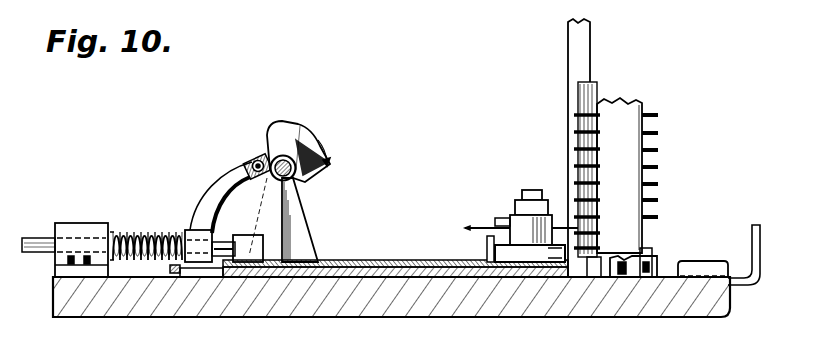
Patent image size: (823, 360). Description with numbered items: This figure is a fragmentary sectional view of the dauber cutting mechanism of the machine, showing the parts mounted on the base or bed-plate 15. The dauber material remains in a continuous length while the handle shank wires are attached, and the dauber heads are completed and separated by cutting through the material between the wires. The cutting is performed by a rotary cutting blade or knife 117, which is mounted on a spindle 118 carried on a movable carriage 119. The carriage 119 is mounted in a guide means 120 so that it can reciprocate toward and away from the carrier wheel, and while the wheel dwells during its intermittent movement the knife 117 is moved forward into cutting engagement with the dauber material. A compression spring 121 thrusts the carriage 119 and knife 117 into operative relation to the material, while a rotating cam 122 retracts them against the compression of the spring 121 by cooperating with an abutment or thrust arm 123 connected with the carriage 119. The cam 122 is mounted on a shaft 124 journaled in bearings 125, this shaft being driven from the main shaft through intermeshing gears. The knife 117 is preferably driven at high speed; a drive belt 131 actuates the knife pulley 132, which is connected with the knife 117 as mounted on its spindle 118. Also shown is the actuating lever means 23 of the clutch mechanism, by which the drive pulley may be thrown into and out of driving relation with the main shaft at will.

The base or bed-plate 15 is at (283, 303).
The actuating lever means 23 is at (661, 278).
The rotary cutting blade or knife 117 is at (484, 227).
The spindle 118 is at (530, 190).
The carriage 119 is at (399, 260).
The guide means 120 is at (423, 278).
The compression spring 121 is at (155, 232).
The rotating cam 122 is at (303, 136).
The abutment or thrust arm 123 is at (226, 182).
The shaft 124 is at (298, 176).
The bearings 125 is at (300, 213).
The drive belt 131 is at (487, 246).
The knife pulley 132 is at (500, 218).